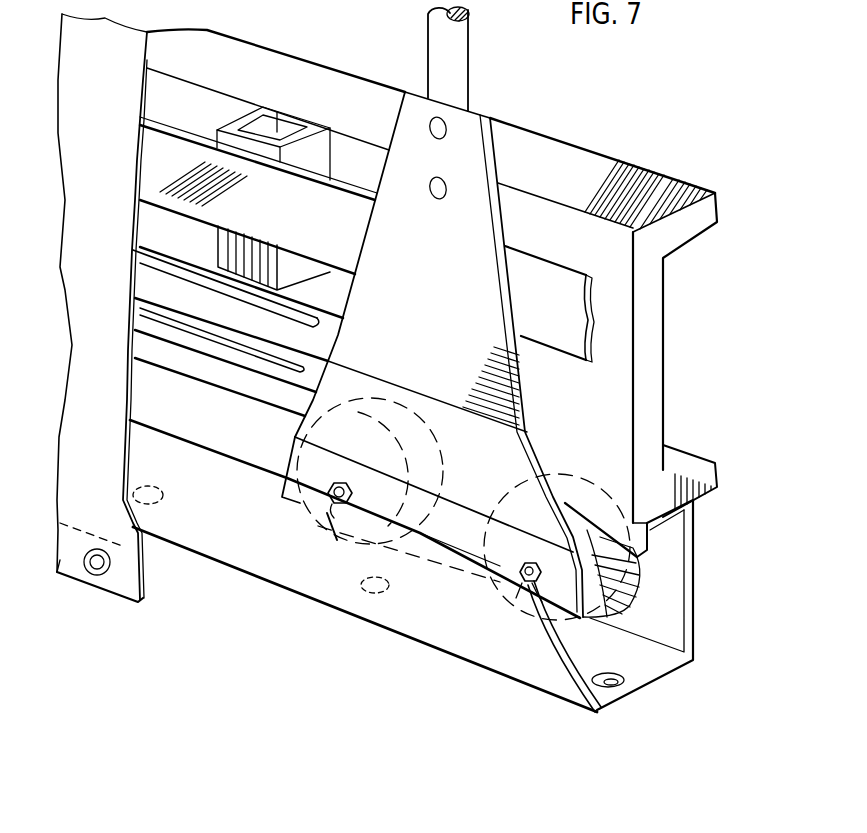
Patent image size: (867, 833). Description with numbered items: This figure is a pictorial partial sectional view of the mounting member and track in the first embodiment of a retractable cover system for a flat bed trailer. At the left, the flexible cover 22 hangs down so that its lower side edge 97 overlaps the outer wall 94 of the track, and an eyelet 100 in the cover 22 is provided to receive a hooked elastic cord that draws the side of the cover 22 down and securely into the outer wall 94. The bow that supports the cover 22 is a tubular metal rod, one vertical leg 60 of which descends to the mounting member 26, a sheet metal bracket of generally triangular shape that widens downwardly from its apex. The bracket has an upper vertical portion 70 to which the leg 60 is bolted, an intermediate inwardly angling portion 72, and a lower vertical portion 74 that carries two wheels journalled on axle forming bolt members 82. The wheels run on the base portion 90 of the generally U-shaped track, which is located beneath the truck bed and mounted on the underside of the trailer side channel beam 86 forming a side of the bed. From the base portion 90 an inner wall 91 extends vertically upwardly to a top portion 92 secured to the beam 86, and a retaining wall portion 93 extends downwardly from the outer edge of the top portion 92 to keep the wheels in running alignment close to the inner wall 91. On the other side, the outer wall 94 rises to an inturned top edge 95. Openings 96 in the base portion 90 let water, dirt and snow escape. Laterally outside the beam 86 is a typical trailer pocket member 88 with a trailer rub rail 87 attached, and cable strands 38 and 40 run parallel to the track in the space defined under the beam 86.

The cover 22 is at (103, 227).
The mounting member 26 is at (507, 173).
The cable strand 38 is at (318, 322).
The cable strand 40 is at (318, 370).
The vertical leg 60 is at (457, 53).
The upper vertical portion 70 is at (472, 307).
The intermediate inwardly angling portion 72 is at (491, 465).
The lower vertical portion 74 is at (469, 546).
The axle forming bolt member 82 is at (330, 500).
The side channel beam 86 is at (650, 368).
The trailer rub rail 87 is at (590, 295).
The trailer pocket member 88 is at (307, 160).
The base portion 90 is at (677, 672).
The inner wall 91 is at (697, 590).
The top portion 92 is at (667, 524).
The retaining wall portion 93 is at (647, 545).
The outer wall 94 is at (560, 665).
The inturned top edge 95 is at (525, 600).
The opening 96 is at (623, 680).
The lower side edge 97 is at (73, 575).
The eyelet 100 is at (110, 575).